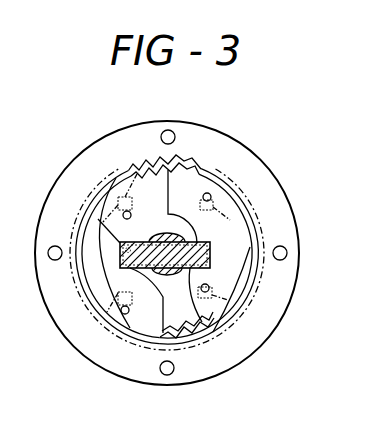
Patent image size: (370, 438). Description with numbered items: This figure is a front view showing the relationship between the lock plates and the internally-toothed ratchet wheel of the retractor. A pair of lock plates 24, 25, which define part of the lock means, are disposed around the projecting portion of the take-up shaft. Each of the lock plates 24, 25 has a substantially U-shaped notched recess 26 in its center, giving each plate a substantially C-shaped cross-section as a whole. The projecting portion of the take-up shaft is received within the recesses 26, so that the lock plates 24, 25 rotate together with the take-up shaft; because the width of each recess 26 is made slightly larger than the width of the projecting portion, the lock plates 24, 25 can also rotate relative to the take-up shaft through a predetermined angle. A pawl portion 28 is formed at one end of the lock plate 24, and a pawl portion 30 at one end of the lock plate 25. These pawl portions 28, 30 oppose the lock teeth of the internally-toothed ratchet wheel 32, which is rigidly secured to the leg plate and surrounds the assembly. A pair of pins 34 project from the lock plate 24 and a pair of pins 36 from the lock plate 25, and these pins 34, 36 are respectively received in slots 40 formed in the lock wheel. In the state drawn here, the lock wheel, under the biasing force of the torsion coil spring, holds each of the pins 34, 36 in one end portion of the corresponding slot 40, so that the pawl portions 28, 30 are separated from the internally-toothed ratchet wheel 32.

The lock plate 24 is at (80, 277).
The lock plate 25 is at (262, 270).
The notched recess 26 is at (98, 219).
The pawl portion 28 is at (130, 165).
The pawl portion 30 is at (215, 327).
The internally-toothed ratchet wheel 32 is at (298, 239).
The pins 34 is at (125, 212).
The pins 36 is at (208, 193).
The slots 40 is at (138, 164).